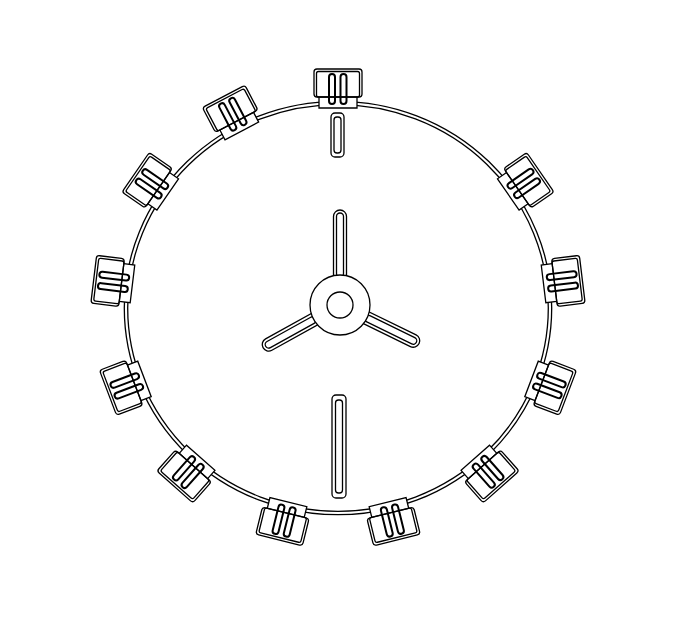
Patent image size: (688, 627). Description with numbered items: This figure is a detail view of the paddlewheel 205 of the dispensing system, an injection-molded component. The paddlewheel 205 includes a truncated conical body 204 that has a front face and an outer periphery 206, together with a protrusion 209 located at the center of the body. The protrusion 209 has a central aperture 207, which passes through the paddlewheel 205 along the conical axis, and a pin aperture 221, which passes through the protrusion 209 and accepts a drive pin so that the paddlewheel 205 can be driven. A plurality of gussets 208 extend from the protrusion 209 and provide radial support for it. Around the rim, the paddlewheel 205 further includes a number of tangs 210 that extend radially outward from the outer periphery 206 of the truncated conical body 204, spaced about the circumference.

The truncated conical body 204 is at (247, 503).
The paddlewheel 205 is at (151, 100).
The outer periphery 206 is at (197, 150).
The central aperture 207 is at (326, 307).
The gussets 208 is at (276, 339).
The protrusion 209 is at (353, 333).
The tangs 210 is at (389, 339).
The pin aperture 221 is at (355, 296).